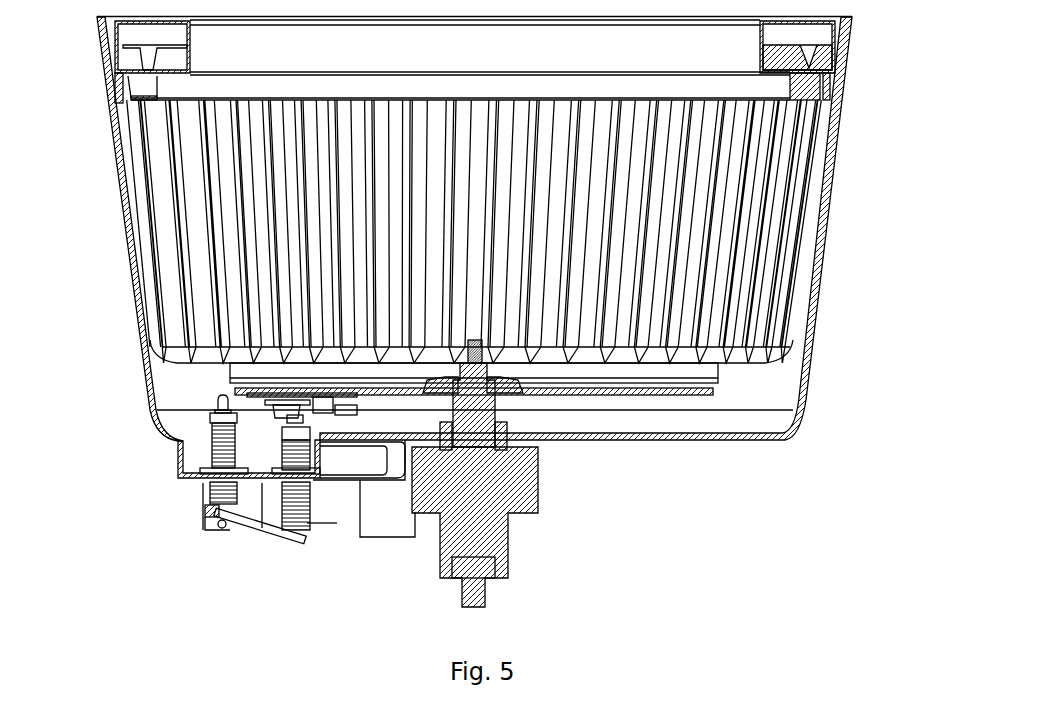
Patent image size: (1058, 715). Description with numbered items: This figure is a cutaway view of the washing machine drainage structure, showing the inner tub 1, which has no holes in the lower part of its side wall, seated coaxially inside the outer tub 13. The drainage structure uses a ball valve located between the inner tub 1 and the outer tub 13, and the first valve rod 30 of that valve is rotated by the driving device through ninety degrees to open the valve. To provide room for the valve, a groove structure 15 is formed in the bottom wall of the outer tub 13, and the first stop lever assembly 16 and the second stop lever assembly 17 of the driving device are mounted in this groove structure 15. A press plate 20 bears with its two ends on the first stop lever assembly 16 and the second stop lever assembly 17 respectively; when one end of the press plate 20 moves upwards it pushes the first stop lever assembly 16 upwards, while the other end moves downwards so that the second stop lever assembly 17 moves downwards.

The inner tub 1 is at (778, 182).
The outer tub 13 is at (822, 262).
The groove structure 15 is at (180, 479).
The first stop lever assembly 16 is at (223, 460).
The second stop lever assembly 17 is at (300, 453).
The press plate 20 is at (267, 523).
The first valve rod 30 is at (210, 428).